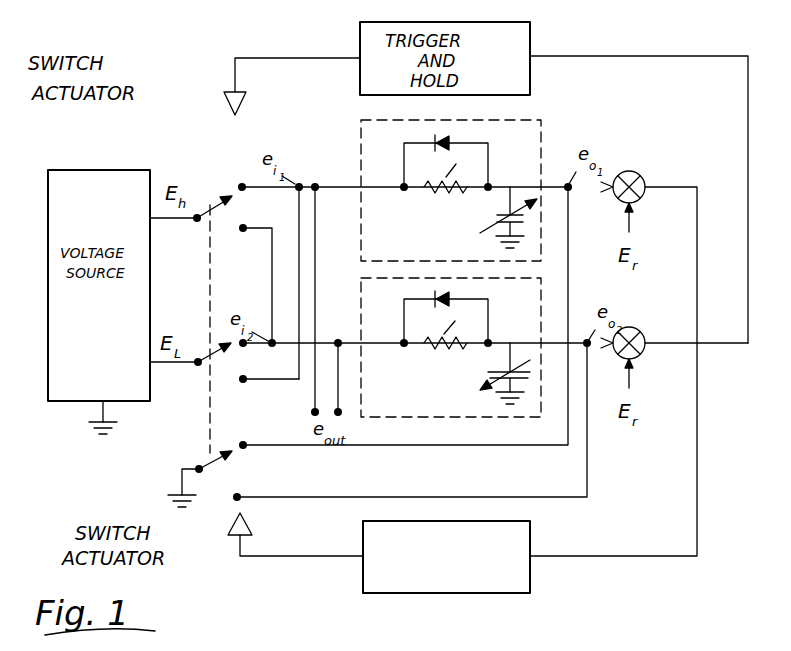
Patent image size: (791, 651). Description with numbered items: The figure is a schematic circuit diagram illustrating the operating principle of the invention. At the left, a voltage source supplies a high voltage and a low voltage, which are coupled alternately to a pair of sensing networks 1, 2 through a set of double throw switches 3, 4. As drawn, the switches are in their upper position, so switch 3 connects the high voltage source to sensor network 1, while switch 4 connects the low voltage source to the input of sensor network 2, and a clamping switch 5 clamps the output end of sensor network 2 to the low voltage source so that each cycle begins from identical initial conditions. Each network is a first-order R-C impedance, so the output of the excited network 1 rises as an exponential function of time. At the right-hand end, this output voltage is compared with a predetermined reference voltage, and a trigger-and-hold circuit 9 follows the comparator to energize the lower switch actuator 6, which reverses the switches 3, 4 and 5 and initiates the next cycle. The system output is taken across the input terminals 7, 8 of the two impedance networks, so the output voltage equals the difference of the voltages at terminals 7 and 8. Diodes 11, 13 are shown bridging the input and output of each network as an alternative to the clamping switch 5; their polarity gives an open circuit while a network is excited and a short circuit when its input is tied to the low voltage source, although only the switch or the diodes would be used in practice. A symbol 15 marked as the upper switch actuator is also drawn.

The sensing network 1 is at (437, 190).
The sensing network 2 is at (434, 345).
The double throw switch 3 is at (228, 222).
The double throw switch 4 is at (230, 378).
The clamping switch 5 is at (222, 478).
The lower switch actuator 6 is at (250, 524).
The input terminal 7 is at (320, 177).
The input terminal 8 is at (343, 334).
The trigger-and-hold circuit 9 is at (532, 541).
The diode 11 is at (452, 139).
The diode 13 is at (452, 296).
The switch actuator input 15 is at (240, 106).